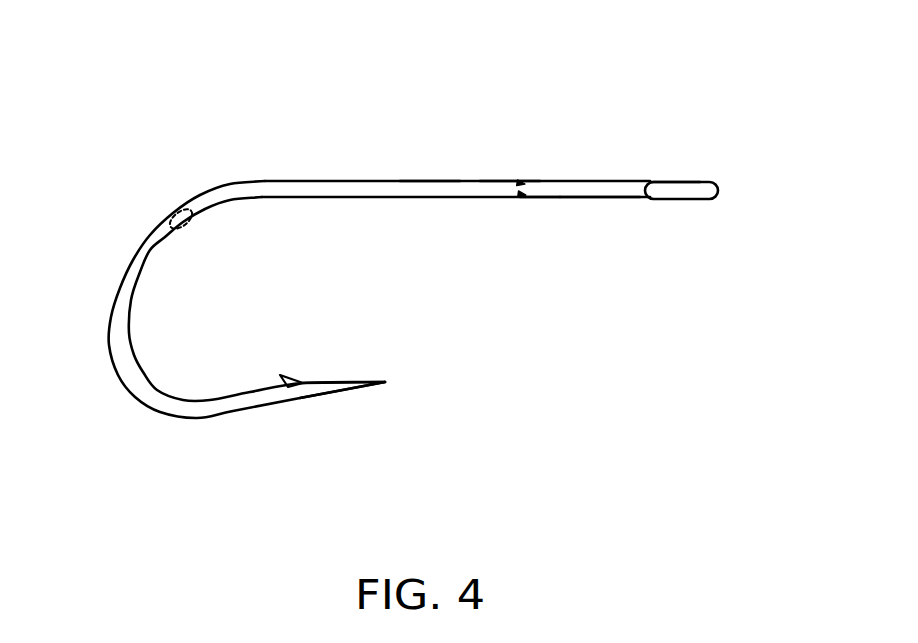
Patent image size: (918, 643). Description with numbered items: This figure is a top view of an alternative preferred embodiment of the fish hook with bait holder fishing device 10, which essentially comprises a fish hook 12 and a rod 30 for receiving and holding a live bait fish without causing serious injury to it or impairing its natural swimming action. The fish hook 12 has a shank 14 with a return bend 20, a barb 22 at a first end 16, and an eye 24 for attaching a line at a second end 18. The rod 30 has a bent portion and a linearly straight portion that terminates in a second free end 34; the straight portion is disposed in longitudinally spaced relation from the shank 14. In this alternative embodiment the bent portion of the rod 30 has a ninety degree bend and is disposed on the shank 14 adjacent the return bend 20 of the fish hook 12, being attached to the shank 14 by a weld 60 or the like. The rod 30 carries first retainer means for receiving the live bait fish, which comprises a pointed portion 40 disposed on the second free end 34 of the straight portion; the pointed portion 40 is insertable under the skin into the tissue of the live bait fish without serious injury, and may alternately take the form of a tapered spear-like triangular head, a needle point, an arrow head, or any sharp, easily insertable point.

The fish hook with bait holder fishing device 10 is at (430, 235).
The fish hook 12 is at (392, 200).
The shank 14 is at (580, 200).
The first end 16 is at (385, 382).
The second end 18 is at (726, 148).
The return bend 20 is at (143, 401).
The barb 22 is at (316, 383).
The eye 24 is at (658, 182).
The rod 30 is at (428, 180).
The second free end 34 is at (535, 190).
The pointed portion 40 is at (498, 180).
The weld 60 is at (175, 212).